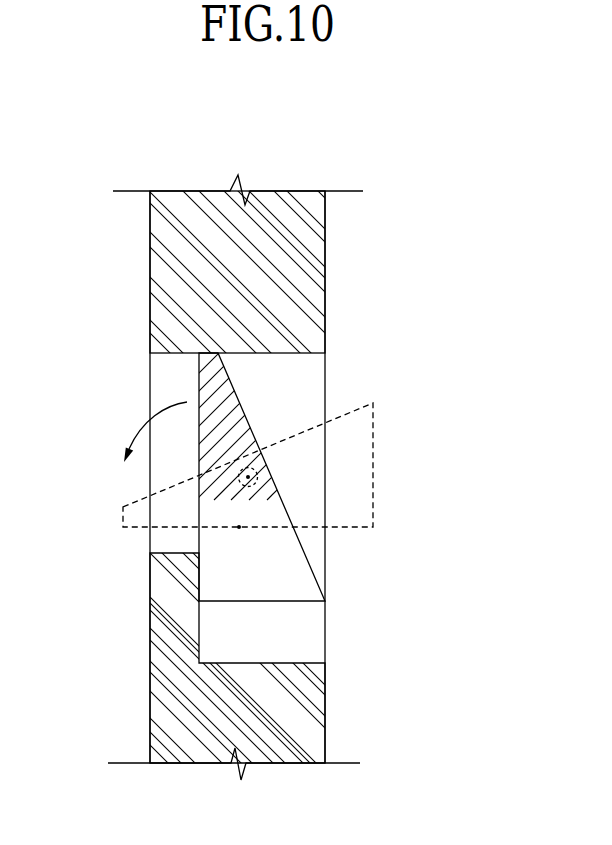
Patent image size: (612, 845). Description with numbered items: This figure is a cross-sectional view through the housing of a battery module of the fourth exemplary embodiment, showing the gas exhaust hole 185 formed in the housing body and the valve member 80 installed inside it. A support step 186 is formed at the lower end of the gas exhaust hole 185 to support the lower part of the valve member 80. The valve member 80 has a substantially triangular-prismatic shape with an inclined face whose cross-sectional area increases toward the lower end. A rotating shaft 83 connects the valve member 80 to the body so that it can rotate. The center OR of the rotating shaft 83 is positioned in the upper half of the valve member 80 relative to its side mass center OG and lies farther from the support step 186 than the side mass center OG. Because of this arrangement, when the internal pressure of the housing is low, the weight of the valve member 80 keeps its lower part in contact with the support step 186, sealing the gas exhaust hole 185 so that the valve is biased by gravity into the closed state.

The gas exhaust hole 185 is at (150, 383).
The support step 186 is at (163, 583).
The valve member 80 is at (308, 542).
The rotating shaft 83 is at (248, 477).
The center of the rotating shaft OR is at (248, 477).
The side mass center OG is at (239, 527).